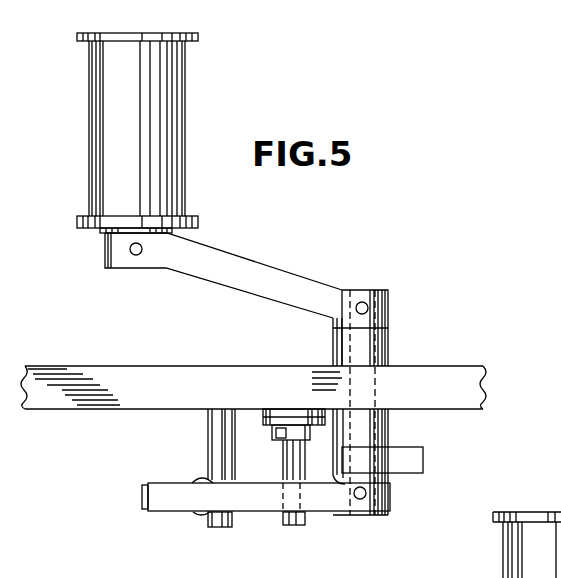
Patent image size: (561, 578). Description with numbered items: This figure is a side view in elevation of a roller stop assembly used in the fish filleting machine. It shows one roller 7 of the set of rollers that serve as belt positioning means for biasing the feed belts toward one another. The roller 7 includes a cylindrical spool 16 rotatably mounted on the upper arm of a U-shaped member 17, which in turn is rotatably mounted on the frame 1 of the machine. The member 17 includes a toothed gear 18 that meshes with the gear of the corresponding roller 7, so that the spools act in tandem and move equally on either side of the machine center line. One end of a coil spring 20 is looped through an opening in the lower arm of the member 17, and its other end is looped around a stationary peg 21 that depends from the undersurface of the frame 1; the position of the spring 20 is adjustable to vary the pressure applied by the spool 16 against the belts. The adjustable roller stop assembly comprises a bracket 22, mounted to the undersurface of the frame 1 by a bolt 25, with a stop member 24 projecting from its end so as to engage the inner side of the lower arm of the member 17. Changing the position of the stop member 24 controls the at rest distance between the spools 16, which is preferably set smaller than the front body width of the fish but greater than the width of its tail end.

The frame 1 is at (112, 366).
The roller 7 is at (427, 302).
The cylindrical spool 16 is at (185, 89).
The U-shaped member 17 is at (292, 273).
The toothed gear 18 is at (425, 460).
The coil spring 20 is at (195, 520).
The stationary peg 21 is at (207, 458).
The bracket 22 is at (263, 433).
The stop member 24 is at (305, 470).
The bolt 25 is at (281, 445).